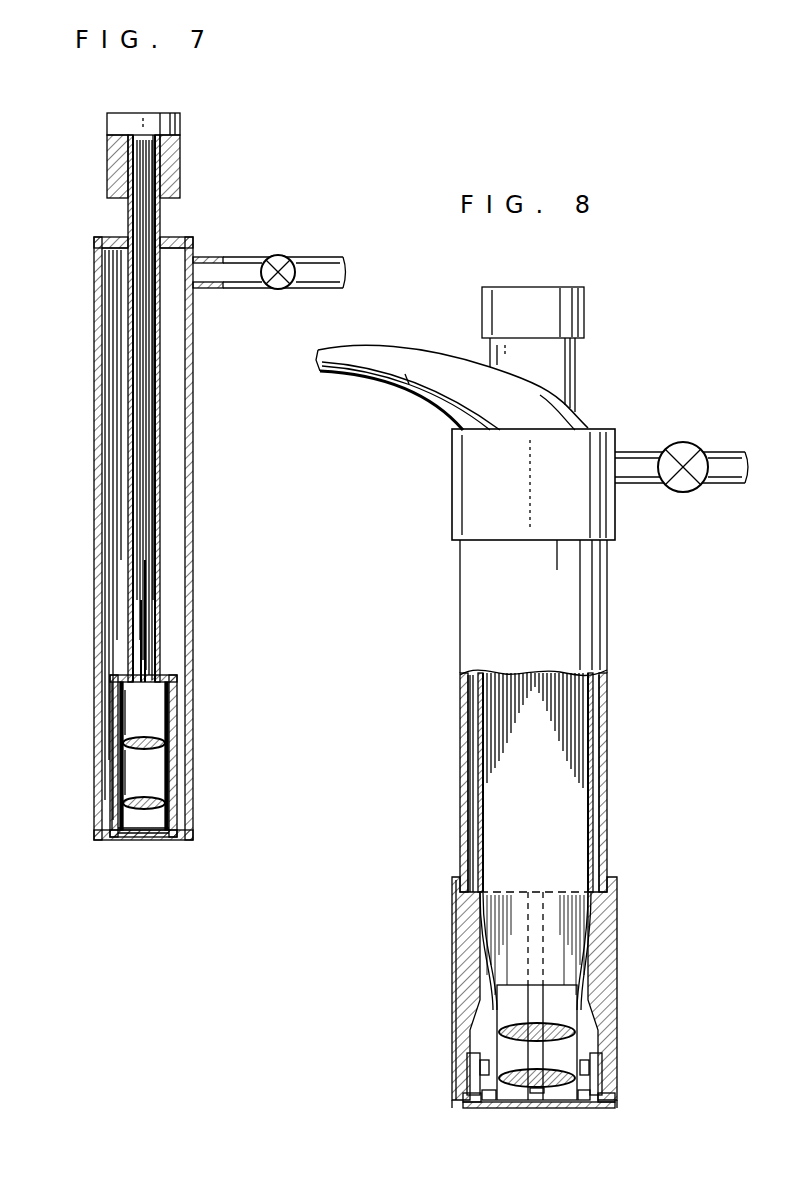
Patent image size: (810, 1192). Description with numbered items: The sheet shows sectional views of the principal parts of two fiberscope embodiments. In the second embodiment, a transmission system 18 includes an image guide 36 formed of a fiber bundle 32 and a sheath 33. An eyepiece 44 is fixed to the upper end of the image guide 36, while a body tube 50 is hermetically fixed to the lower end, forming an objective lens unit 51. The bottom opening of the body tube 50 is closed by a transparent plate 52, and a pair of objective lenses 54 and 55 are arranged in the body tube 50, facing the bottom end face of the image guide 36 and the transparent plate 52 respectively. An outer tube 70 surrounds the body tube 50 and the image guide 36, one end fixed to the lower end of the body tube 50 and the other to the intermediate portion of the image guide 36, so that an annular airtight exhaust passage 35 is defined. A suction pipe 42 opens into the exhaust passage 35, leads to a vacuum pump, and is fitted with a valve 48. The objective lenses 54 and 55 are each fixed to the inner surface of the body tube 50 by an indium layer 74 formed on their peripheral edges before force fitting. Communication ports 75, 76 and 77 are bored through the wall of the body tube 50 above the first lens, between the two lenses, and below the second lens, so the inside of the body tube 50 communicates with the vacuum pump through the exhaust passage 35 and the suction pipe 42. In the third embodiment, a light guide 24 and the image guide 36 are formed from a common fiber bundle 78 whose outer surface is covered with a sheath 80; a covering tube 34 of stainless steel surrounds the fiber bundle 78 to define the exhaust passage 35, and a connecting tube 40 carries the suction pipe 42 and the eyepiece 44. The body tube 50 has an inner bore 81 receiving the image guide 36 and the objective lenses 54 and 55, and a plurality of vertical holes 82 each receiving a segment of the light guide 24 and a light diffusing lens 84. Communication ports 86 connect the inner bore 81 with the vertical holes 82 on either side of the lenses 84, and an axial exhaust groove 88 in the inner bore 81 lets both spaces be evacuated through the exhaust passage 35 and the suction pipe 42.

In FIG. 7, the transmission system 18 is at (85, 328).
In FIG. 8, the light guide 24 is at (408, 390).
In FIG. 7, the fiber bundle 32 is at (148, 463).
In FIG. 7, the sheath 33 is at (160, 378).
In FIG. 8, the covering tube 34 is at (608, 742).
In FIG. 7, the exhaust passage 35 is at (110, 537).
In FIG. 8, the exhaust passage 35 is at (472, 744).
In FIG. 7, the image guide 36 is at (128, 435).
In FIG. 8, the image guide 36 is at (576, 366).
In FIG. 8, the connecting tube 40 is at (610, 524).
In FIG. 7, the suction pipe 42 is at (240, 257).
In FIG. 8, the suction pipe 42 is at (636, 452).
In FIG. 7, the eyepiece 44 is at (180, 118).
In FIG. 8, the eyepiece 44 is at (584, 305).
In FIG. 7, the valve 48 is at (290, 258).
In FIG. 8, the valve 48 is at (690, 444).
In FIG. 7, the body tube 50 is at (115, 716).
In FIG. 8, the body tube 50 is at (618, 908).
In FIG. 7, the objective lens unit 51 is at (113, 775).
In FIG. 8, the objective lens unit 51 is at (447, 938).
In FIG. 7, the transparent plate 52 is at (150, 840).
In FIG. 8, the transparent plate 52 is at (570, 1108).
In FIG. 7, the first objective lens 54 is at (150, 736).
In FIG. 8, the first objective lens 54 is at (500, 1012).
In FIG. 7, the second objective lens 55 is at (130, 805).
In FIG. 8, the second objective lens 55 is at (515, 1092).
In FIG. 7, the outer tube 70 is at (190, 570).
In FIG. 7, the indium layer 74 is at (170, 762).
In FIG. 7, the communication port 75 is at (172, 700).
In FIG. 7, the communication port 76 is at (172, 790).
In FIG. 7, the communication port 77 is at (178, 830).
In FIG. 8, the fiber bundle 78 is at (612, 800).
In FIG. 8, the sheath 80 is at (480, 808).
In FIG. 8, the inner bore 81 is at (575, 998).
In FIG. 8, the vertical holes 82 is at (468, 1070).
In FIG. 8, the lens 84 is at (603, 1088).
In FIG. 8, the communication ports 86 is at (585, 1045).
In FIG. 8, the exhaust groove 88 is at (497, 1053).